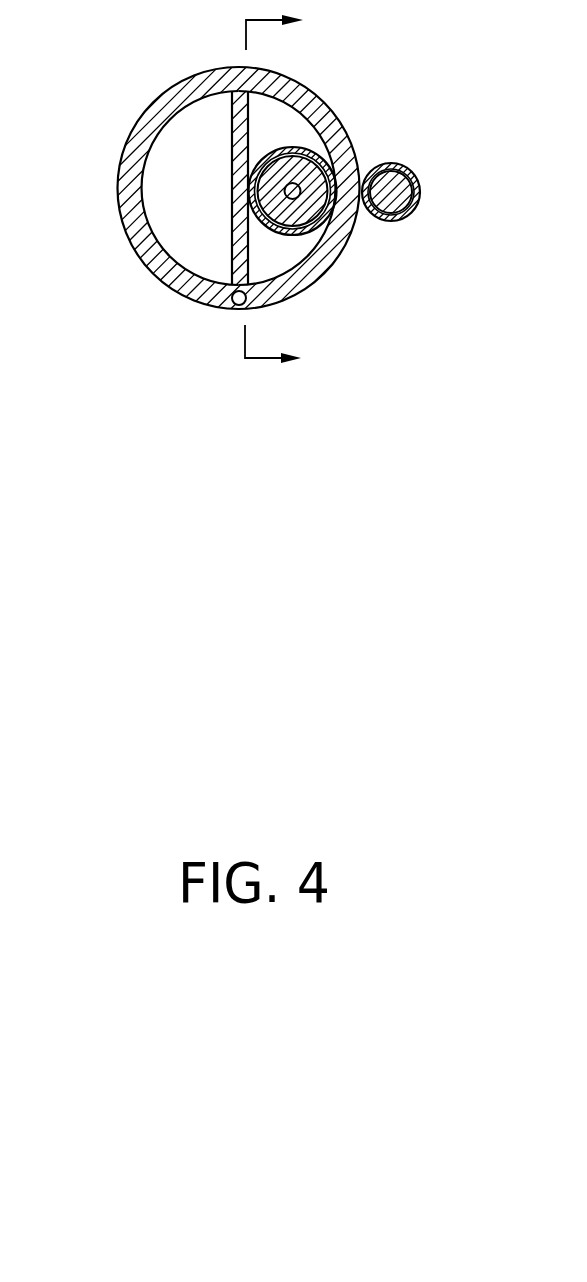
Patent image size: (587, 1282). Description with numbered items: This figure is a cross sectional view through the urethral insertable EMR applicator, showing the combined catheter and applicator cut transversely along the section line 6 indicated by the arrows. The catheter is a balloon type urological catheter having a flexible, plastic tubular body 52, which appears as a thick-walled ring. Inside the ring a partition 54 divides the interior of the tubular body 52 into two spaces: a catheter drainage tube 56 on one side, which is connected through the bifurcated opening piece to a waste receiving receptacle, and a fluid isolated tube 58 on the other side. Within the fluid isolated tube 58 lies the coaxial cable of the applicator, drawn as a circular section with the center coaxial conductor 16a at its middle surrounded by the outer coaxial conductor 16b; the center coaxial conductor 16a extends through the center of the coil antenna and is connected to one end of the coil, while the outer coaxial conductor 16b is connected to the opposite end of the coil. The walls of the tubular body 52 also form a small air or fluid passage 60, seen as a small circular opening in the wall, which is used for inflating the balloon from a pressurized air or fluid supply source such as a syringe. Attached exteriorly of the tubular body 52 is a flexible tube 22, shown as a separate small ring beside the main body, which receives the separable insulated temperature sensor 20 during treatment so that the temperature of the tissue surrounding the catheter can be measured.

The section line 6- 6 is at (286, 184).
The center coaxial conductor 16a is at (298, 185).
The outer coaxial conductor 16b is at (308, 228).
The temperature sensor 20 is at (398, 197).
The flexible tube 22 is at (413, 180).
The tubular body 52 is at (138, 137).
The partition 54 is at (247, 118).
The catheter drainage tube 56 is at (172, 223).
The fluid isolated tube 58 is at (275, 242).
The air or fluid passage 60 is at (233, 301).